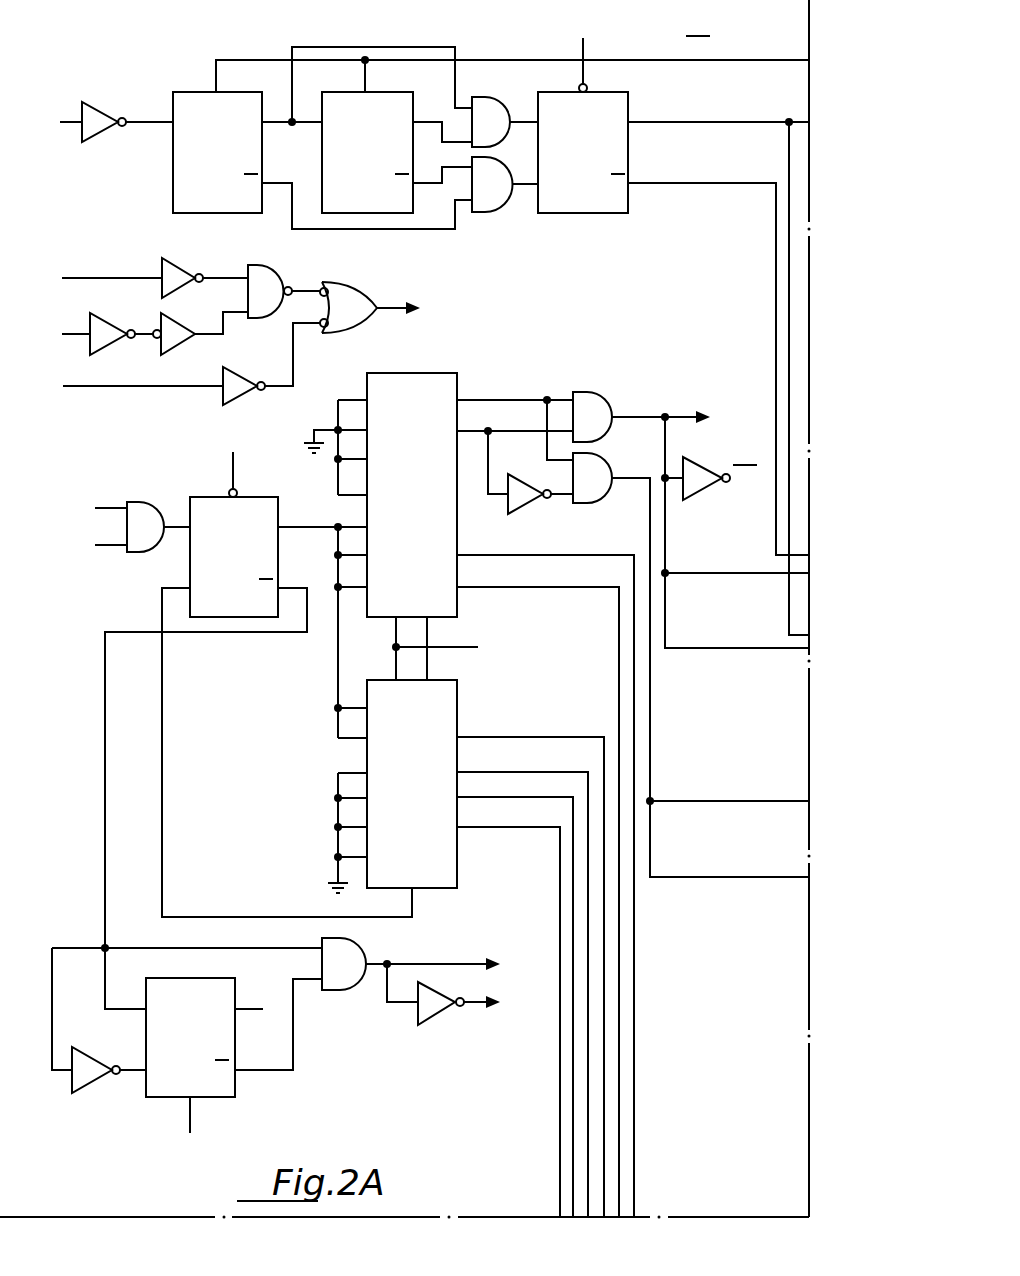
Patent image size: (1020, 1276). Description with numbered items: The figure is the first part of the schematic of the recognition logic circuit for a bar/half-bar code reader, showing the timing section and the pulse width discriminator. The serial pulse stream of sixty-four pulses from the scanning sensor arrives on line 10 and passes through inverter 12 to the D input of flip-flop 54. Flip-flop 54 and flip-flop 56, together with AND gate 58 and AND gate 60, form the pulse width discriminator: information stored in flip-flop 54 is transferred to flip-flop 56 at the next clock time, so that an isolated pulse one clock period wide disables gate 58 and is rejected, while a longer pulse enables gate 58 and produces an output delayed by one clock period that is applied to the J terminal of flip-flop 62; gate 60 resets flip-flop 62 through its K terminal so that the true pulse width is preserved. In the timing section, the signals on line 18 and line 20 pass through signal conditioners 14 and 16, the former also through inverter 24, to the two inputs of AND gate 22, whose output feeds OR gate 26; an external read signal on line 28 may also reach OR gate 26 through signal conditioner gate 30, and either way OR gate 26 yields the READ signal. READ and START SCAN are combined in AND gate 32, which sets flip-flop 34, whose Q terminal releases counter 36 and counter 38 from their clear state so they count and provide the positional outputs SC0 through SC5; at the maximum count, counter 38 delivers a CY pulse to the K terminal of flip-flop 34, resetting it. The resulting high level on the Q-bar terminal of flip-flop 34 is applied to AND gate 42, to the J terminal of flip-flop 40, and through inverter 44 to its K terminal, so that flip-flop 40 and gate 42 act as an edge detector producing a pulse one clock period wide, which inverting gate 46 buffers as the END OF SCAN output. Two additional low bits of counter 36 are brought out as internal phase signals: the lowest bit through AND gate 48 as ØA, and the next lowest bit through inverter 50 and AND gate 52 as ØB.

The line 10 is at (60, 121).
The inverter 12 is at (100, 102).
The signal conditioner 14 is at (112, 341).
The signal conditioner 16 is at (177, 274).
The line 18 is at (69, 333).
The line 20 is at (102, 276).
The AND gate 22 is at (275, 276).
The inverter 24 is at (181, 341).
The OR gate 26 is at (365, 288).
The line 28 is at (162, 388).
The signal conditioner gate 30 is at (249, 378).
The AND gate 32 is at (135, 498).
The flip-flop 34 is at (262, 497).
The counter 36 is at (420, 375).
The counter 38 is at (462, 872).
The flip-flop 40 is at (236, 1098).
The AND gate 42 is at (340, 989).
The inverter 44 is at (88, 1086).
The inverting gate 46 is at (440, 1021).
The AND gate 48 is at (594, 401).
The inverter 50 is at (522, 508).
The AND gate 52 is at (593, 498).
The D-type flip-flop 54 is at (173, 179).
The D-type flip-flop 56 is at (404, 98).
The AND gate 58 is at (498, 100).
The AND gate 60 is at (492, 206).
The flip-flop 62 is at (596, 214).